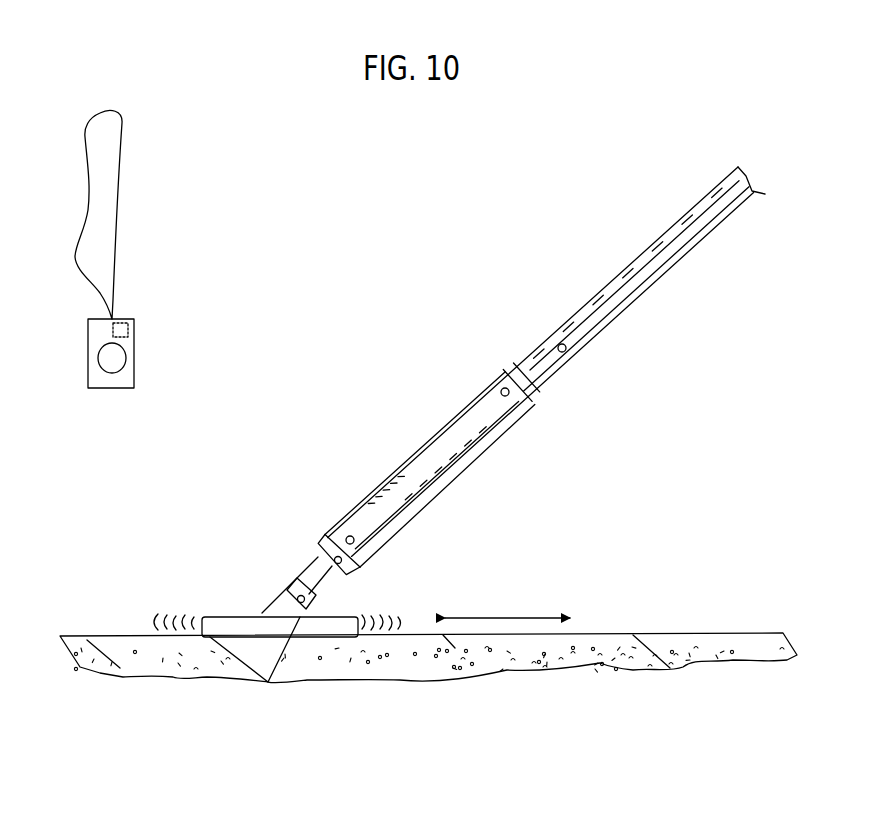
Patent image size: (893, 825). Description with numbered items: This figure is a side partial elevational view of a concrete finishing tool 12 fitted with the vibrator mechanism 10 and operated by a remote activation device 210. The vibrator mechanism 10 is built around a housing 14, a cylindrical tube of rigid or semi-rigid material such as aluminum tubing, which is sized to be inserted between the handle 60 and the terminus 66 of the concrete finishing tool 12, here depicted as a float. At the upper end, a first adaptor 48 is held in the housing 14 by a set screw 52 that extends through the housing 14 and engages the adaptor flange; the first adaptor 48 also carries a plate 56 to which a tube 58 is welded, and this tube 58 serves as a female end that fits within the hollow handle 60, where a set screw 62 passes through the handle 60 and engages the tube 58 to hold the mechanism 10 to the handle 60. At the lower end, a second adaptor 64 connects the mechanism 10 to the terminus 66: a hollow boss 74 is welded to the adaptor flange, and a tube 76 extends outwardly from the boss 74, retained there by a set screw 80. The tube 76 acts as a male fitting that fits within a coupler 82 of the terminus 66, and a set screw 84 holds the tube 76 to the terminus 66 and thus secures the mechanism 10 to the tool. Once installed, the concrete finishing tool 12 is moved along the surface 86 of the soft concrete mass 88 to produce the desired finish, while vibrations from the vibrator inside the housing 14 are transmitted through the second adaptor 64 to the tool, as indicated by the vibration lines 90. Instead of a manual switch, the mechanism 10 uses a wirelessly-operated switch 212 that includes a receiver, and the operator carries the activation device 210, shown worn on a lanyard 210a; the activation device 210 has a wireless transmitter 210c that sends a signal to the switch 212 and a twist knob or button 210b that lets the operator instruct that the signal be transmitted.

The vibrator mechanism 10 is at (484, 469).
The concrete finishing tool 12 is at (218, 600).
The housing 14 is at (420, 450).
The first adaptor 48 is at (545, 407).
The set screw 52 is at (492, 384).
The plate 56 is at (507, 366).
The tube 58 is at (560, 322).
The handle 60 is at (617, 319).
The set screw 62 is at (556, 356).
The second adaptor 64 is at (318, 510).
The terminus 66 is at (347, 616).
The hollow boss 74 is at (356, 540).
The tube 76 is at (314, 562).
The set screw 80 is at (360, 575).
The coupler 82 is at (282, 597).
The set screw 84 is at (268, 682).
The surface 86 is at (622, 635).
The soft concrete mass 88 is at (597, 660).
The vibration lines 90 is at (163, 603).
The activation device 210 is at (88, 338).
The lanyard 210a is at (117, 213).
The button 210b is at (112, 370).
The wireless transmitter 210c is at (127, 330).
The wirelessly-operated switch 212 is at (370, 470).